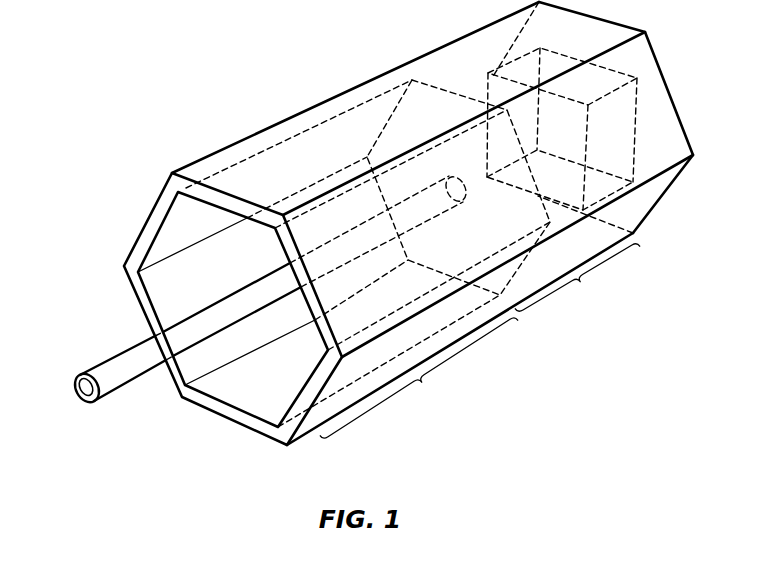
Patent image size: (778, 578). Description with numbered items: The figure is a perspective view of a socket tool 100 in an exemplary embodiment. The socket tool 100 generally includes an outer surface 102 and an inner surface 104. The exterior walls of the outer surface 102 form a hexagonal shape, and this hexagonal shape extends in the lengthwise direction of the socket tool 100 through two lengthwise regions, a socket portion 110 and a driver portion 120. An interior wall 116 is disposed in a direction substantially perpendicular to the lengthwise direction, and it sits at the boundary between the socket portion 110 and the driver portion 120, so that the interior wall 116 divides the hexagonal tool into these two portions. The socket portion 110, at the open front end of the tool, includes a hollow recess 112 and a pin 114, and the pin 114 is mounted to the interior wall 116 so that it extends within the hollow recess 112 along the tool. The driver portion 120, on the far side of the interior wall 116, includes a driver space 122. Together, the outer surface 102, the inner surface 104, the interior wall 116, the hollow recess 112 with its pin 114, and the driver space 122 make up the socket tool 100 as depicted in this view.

The socket tool 100 is at (172, 50).
The outer surface 102 is at (245, 150).
The inner surface 104 is at (168, 278).
The socket portion 110 is at (418, 378).
The hollow recess 112 is at (236, 393).
The pin 114 is at (95, 370).
The interior wall 116 is at (432, 101).
The driver portion 120 is at (577, 278).
The driver space 122 is at (637, 123).